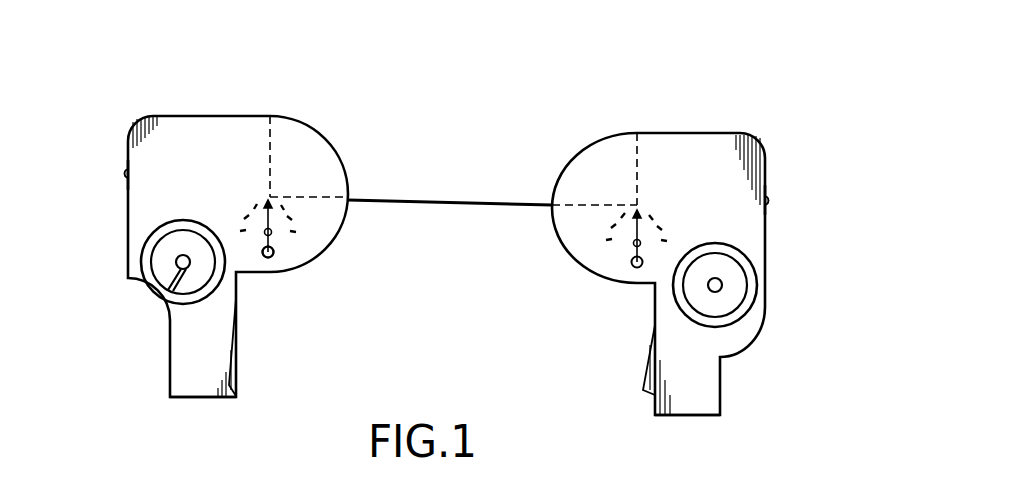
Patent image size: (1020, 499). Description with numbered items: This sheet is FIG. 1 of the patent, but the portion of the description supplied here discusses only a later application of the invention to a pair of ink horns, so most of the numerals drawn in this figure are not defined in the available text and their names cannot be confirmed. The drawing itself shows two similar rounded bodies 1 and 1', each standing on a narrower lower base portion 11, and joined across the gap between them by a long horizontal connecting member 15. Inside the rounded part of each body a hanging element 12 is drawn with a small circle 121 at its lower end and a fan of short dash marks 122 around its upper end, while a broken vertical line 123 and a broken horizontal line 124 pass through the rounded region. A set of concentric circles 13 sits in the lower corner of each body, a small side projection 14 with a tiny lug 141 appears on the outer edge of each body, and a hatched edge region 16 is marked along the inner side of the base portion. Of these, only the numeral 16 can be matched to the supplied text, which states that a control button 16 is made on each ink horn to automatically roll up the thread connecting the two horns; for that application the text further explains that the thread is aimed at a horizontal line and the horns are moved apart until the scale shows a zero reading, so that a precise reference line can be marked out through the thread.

The lamp body 1 is at (238, 202).
The second lamp body 1' is at (658, 226).
The base leg 11 is at (198, 392).
The needle pointer assembly 12 is at (283, 213).
The pivot pin of pointer 121 is at (274, 256).
The light ray marks 122 is at (240, 216).
The vertical center line 123 is at (268, 197).
The horizontal center line 124 is at (322, 197).
The adjusting knob 13 is at (175, 279).
The side projection 14 is at (126, 173).
The lug 141 is at (123, 177).
The connecting bar 15 is at (405, 200).
The control button 16 is at (238, 367).